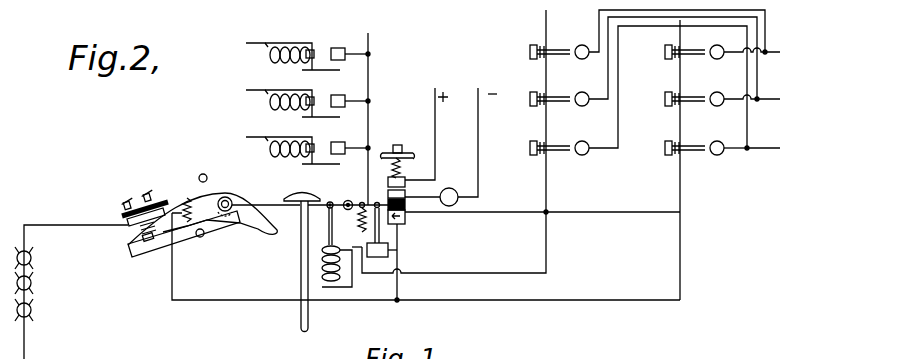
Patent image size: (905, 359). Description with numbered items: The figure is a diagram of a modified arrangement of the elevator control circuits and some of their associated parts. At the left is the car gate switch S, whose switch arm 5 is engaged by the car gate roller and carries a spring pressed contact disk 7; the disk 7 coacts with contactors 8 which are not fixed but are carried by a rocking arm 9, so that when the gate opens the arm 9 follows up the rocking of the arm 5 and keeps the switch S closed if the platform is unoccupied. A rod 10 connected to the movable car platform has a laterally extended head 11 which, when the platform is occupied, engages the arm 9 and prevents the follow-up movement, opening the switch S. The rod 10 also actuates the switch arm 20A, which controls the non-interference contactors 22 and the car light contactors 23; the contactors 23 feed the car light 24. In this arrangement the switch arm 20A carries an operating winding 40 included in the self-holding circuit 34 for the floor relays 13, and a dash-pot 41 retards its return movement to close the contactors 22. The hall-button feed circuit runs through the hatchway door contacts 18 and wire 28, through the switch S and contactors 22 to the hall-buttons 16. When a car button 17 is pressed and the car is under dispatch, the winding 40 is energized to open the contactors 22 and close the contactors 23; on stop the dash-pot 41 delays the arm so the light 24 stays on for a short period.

The car gate switch S is at (144, 194).
The switch arm 5 is at (180, 235).
The contact disk 7 is at (136, 240).
The contactors 8 is at (170, 200).
The rocking arm 9 is at (183, 195).
The rod 10 is at (300, 276).
The head 11 is at (291, 185).
The floor relays 13 is at (311, 43).
The hall-buttons 16 is at (550, 49).
The car buttons 17 is at (687, 52).
The hatchway door contacts 18 is at (32, 260).
The switch arm 20A is at (340, 202).
The contactors 22 is at (406, 218).
The contactors 23 is at (407, 196).
The car light 24 is at (458, 184).
The wire 28 is at (76, 279).
The self-holding circuit 34 is at (352, 275).
The operating winding 40 is at (318, 280).
The dash-pot 41 is at (400, 252).